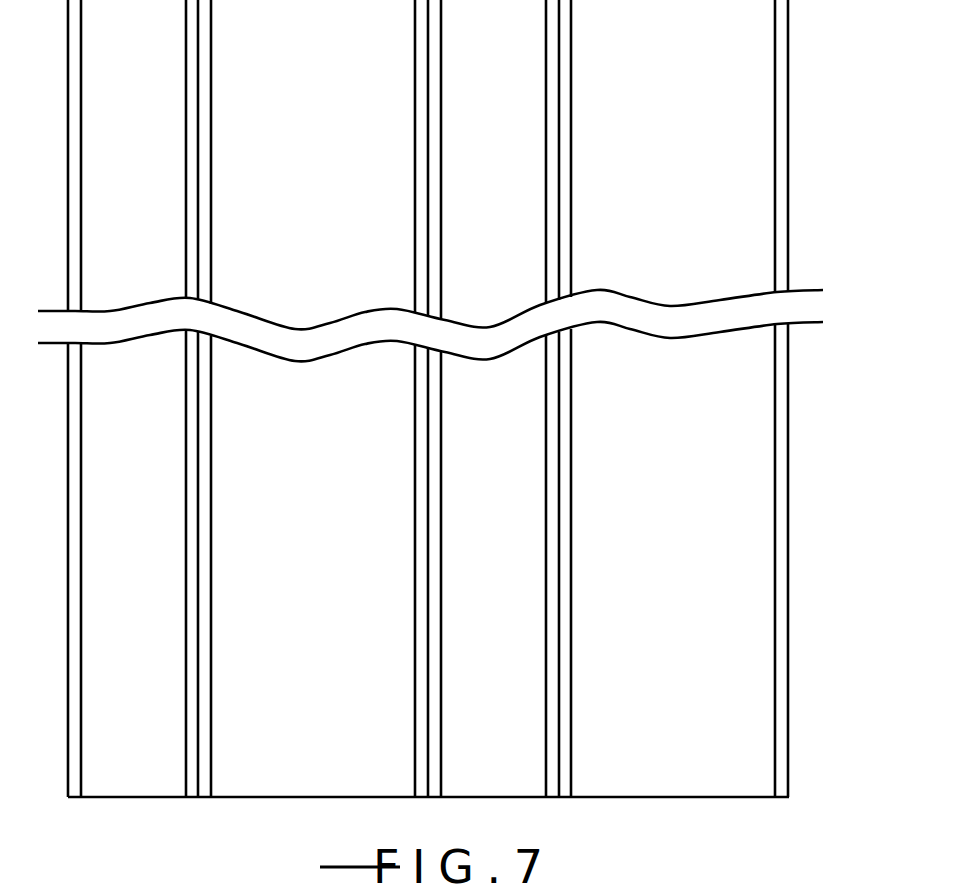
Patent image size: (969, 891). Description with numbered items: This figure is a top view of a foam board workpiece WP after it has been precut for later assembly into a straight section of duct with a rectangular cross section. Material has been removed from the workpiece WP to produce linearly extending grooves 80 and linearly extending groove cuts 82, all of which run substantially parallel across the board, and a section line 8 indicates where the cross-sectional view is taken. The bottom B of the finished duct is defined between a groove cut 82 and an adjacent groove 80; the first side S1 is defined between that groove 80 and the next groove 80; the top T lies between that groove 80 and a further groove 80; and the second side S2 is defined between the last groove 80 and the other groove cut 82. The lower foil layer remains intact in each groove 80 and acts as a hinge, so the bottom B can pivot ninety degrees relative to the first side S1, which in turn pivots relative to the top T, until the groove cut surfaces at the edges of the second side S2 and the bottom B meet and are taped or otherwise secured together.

The groove 80 is at (428, 797).
The groove cut 82 is at (75, 797).
The workpiece WP is at (722, 797).
The section line 8- 8 is at (43, 580).
The first side S1 is at (501, 627).
The second side S2 is at (149, 627).
The top T is at (320, 624).
The bottom B is at (680, 624).